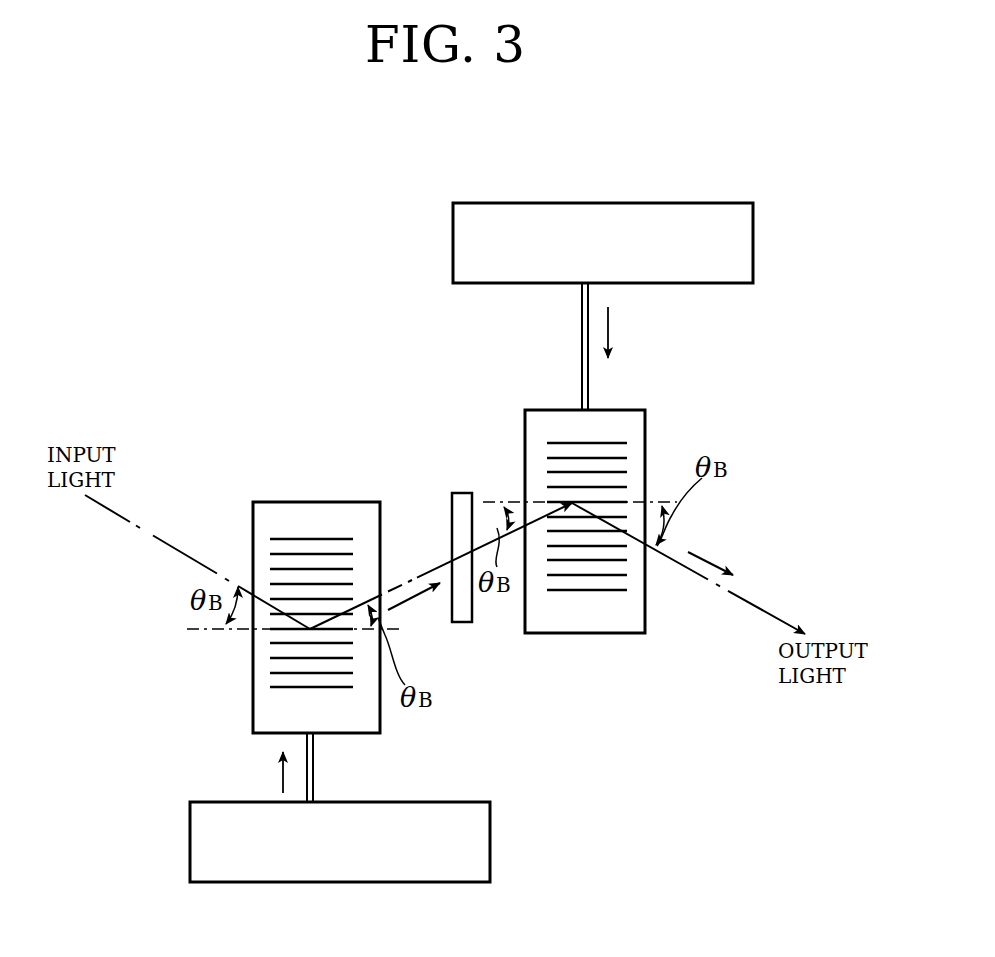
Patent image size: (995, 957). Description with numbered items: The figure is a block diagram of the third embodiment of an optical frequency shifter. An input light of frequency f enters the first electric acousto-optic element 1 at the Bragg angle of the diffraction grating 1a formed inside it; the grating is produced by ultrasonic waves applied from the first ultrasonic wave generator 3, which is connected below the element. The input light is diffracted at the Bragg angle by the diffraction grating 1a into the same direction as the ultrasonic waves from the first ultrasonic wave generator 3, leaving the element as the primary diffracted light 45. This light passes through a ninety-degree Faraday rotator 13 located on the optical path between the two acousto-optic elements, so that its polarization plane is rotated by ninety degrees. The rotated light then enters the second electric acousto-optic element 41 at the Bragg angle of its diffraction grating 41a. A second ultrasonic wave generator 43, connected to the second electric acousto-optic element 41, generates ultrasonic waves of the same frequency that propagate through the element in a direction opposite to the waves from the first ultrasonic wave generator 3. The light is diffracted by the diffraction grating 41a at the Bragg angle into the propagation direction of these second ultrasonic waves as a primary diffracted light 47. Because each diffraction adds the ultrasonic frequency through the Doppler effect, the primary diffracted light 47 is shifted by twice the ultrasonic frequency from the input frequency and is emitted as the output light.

The first electric acousto-optic element 1 is at (253, 665).
The diffraction grating 1a is at (283, 688).
The first ultrasonic wave generator 3 is at (280, 882).
The 90° Faraday rotator 13 is at (460, 492).
The second electric acousto-optic element 41 is at (575, 633).
The diffraction grating 41a is at (608, 592).
The second ultrasonic wave generator 43 is at (648, 203).
The primary diffracted light 45 is at (410, 600).
The primary diffracted light 47 is at (713, 565).